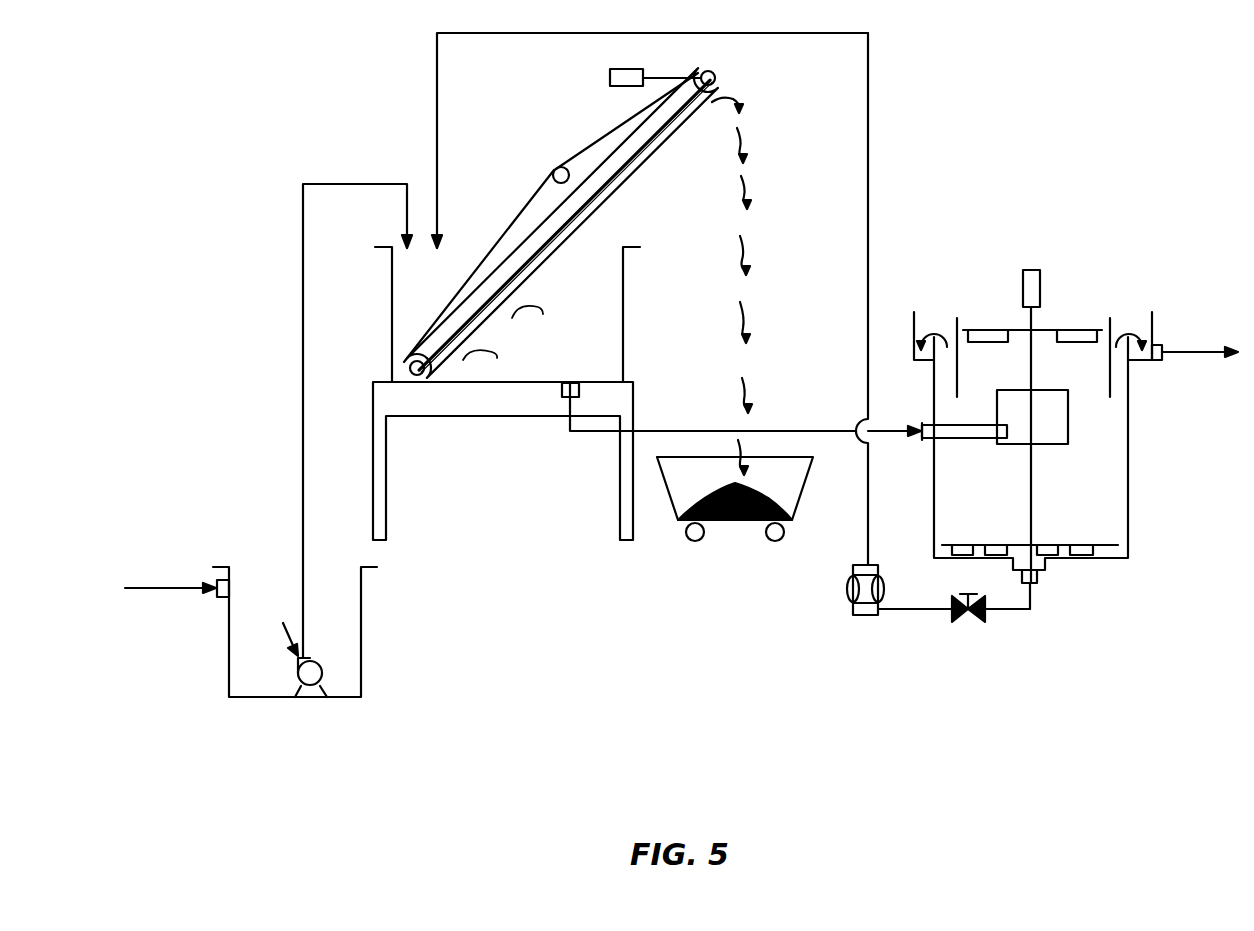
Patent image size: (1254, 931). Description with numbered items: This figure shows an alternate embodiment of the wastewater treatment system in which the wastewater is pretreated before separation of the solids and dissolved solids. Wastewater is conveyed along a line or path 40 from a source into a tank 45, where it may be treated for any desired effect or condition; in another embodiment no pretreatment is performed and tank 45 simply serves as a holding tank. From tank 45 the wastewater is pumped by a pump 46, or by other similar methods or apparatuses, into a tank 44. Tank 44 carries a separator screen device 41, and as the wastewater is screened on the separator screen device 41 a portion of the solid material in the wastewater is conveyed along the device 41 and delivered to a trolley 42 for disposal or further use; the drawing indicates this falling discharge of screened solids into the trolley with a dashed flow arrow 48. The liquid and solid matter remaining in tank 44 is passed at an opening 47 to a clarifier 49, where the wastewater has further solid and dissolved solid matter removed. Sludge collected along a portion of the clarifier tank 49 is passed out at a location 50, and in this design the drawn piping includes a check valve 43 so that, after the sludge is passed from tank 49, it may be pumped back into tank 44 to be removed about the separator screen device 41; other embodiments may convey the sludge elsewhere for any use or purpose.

The line or path 40 is at (150, 586).
The separator screen device 41 is at (551, 218).
The trolley 42 is at (738, 522).
The check valve 43 is at (860, 618).
The tank 44 is at (457, 418).
The tank 45 is at (362, 656).
The pump 46 is at (310, 700).
The opening 47 is at (568, 382).
The material discharge flow 48 is at (745, 147).
The clarifier 49 is at (947, 283).
The location 50 is at (1040, 580).